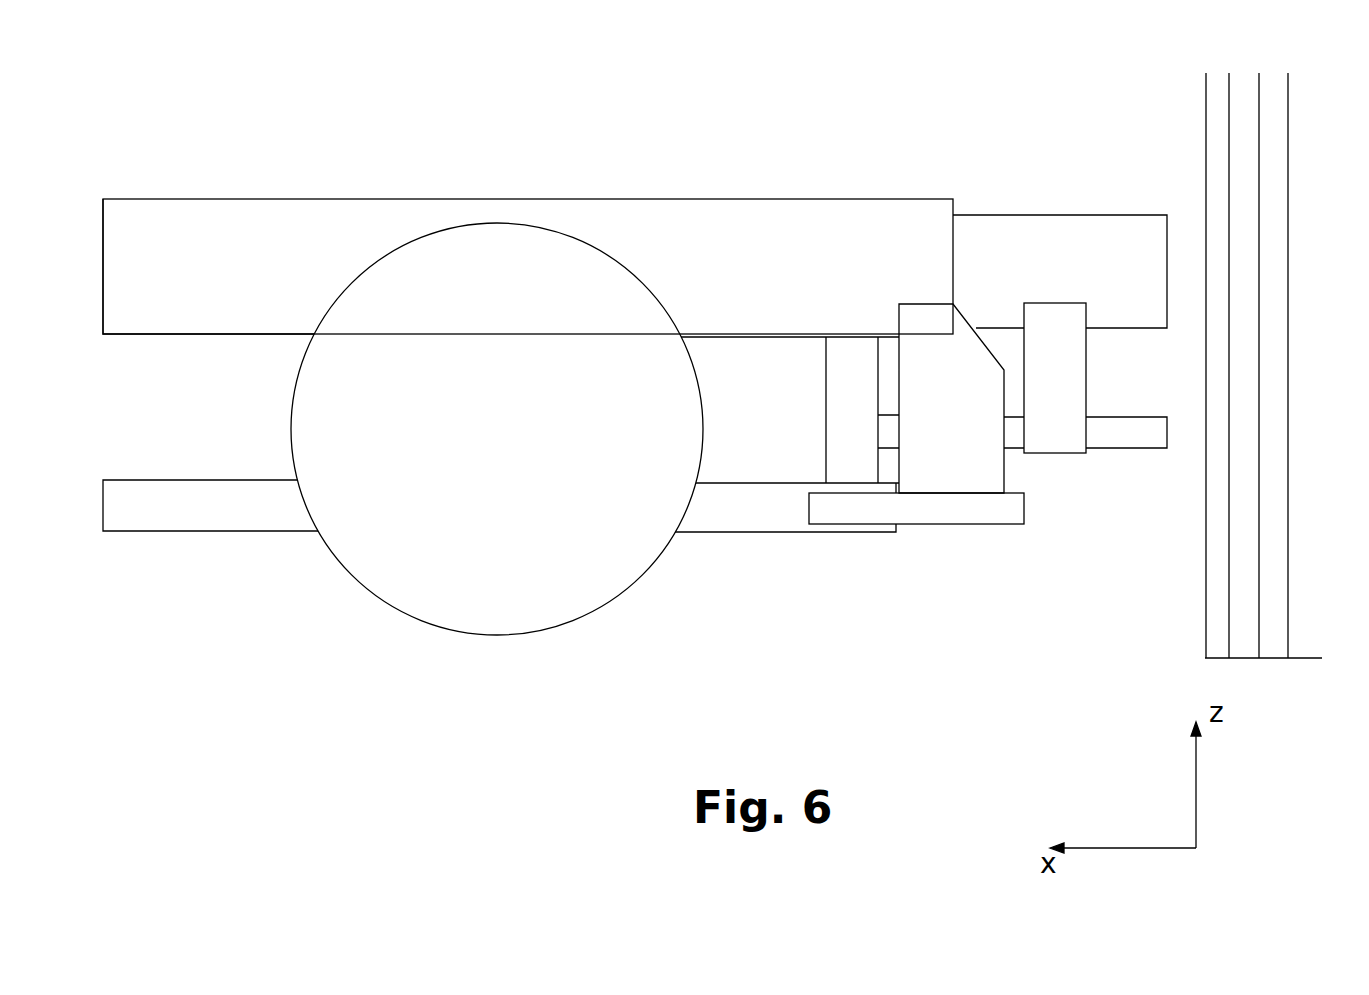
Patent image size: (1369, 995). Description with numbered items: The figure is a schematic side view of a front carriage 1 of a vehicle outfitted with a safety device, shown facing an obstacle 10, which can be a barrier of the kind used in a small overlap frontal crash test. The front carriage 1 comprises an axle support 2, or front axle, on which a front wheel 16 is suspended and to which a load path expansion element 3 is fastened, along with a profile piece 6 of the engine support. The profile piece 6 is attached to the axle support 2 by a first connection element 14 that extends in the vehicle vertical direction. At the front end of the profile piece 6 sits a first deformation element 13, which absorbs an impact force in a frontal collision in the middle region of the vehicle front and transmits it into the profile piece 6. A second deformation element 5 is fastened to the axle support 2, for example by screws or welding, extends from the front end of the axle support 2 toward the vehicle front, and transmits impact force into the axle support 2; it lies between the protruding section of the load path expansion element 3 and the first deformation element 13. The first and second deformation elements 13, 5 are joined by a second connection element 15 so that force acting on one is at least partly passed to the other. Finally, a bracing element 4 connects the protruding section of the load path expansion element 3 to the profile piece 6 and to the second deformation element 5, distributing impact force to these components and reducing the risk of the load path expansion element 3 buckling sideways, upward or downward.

The front carriage 1 is at (1027, 135).
The axle support 2 is at (165, 516).
The load path expansion element 3 is at (974, 515).
The bracing element 4 is at (997, 463).
The second deformation element 5 is at (1128, 440).
The profile piece of the engine support 6 is at (167, 326).
The obstacle 10 is at (1277, 207).
The first deformation element 13 is at (1092, 228).
The first connection element 14 is at (840, 377).
The second connection element 15 is at (1070, 377).
The front wheel 16 is at (433, 602).